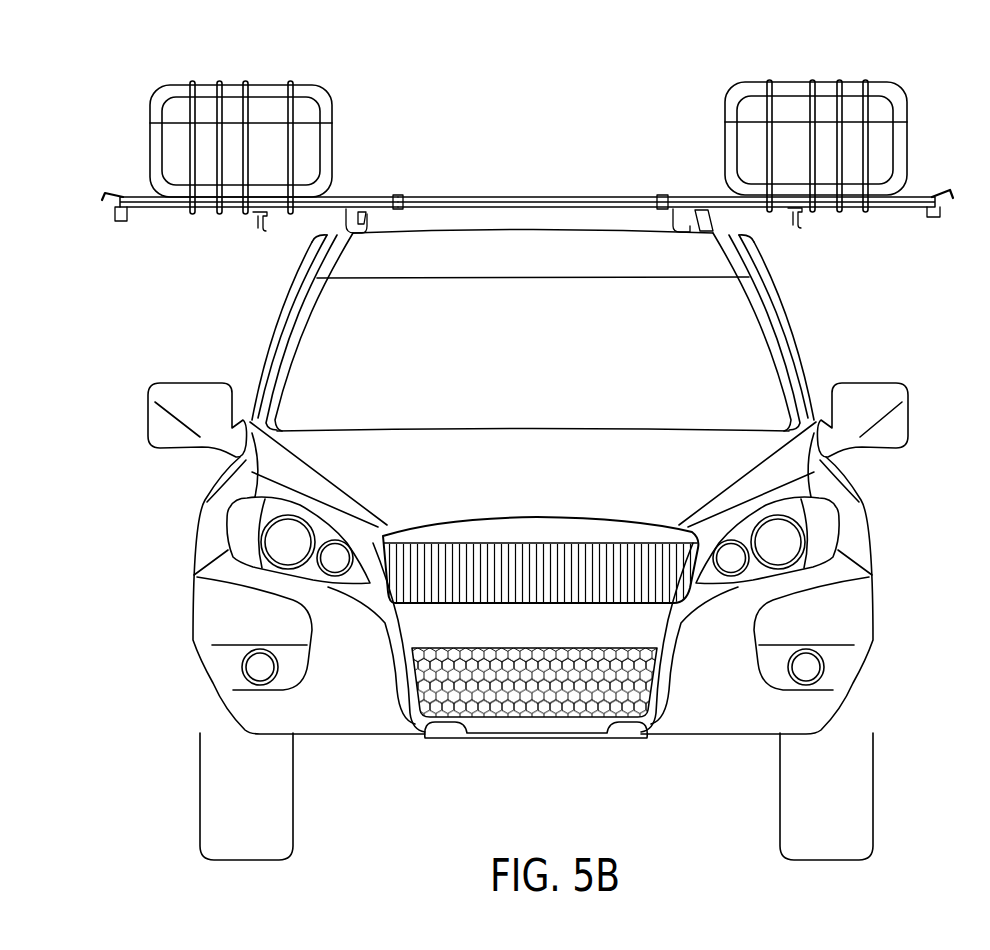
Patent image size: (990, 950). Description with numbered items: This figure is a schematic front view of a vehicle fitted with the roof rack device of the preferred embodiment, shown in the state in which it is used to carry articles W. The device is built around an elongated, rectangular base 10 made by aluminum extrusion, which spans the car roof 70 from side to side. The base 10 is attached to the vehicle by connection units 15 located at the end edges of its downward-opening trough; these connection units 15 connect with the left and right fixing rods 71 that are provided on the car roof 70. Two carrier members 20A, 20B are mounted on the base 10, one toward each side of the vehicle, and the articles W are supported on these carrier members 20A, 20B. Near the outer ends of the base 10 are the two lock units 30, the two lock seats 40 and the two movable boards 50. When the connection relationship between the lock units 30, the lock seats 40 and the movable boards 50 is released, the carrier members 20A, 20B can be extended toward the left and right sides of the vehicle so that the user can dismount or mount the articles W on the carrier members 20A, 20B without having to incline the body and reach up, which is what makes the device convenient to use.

The base 10 is at (541, 125).
The connection unit 15 is at (671, 196).
The carrier member 20A is at (366, 197).
The carrier member 20B is at (920, 193).
The lock unit 30 is at (255, 228).
The lock seat 40 is at (123, 222).
The movable board 50 is at (104, 193).
The car roof 70 is at (503, 230).
The fixing rod 71 is at (713, 224).
The article W is at (268, 102).